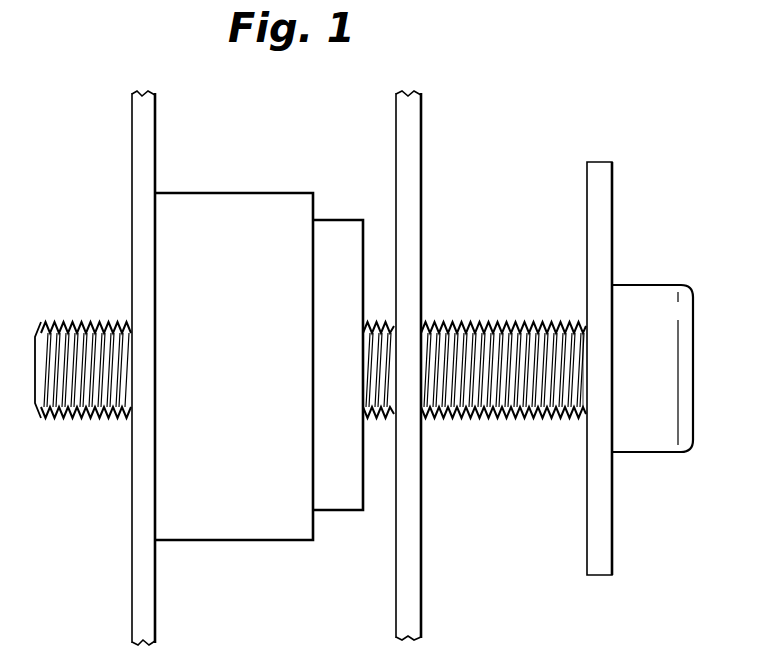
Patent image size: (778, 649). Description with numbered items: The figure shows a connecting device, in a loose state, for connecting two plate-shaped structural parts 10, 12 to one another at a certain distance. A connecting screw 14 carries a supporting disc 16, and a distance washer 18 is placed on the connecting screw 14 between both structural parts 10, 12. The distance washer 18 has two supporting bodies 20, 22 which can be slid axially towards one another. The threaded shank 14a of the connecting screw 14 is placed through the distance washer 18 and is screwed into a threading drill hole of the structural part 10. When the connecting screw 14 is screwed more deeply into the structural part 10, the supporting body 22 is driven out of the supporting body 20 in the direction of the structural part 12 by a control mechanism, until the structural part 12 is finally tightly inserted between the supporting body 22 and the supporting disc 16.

The plate-shaped structural part 10 is at (136, 138).
The plate-shaped structural part 12 is at (411, 131).
The connecting screw 14 is at (475, 318).
The shank 14a is at (525, 412).
The supporting disc 16 is at (600, 195).
The distance washer 18 is at (259, 346).
The supporting body 20 is at (235, 521).
The supporting body 22 is at (342, 498).